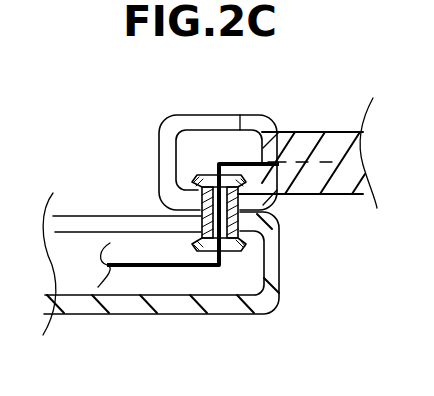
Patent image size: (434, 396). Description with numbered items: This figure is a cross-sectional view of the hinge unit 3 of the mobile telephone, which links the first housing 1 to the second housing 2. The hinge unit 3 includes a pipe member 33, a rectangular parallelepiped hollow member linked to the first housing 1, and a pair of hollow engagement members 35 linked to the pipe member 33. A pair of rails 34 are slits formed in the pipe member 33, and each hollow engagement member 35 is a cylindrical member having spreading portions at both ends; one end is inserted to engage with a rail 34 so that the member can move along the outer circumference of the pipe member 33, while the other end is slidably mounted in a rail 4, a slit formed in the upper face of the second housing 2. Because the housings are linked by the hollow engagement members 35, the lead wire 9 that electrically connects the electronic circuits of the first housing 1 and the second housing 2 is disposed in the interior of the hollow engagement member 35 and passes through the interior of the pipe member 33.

The first housing 1 is at (302, 132).
The second housing 2 is at (128, 313).
The hinge unit 3 is at (88, 68).
The rail 4 is at (78, 232).
The lead wire 9 is at (235, 162).
The pipe member 33 is at (160, 128).
The rail 34 is at (172, 173).
The hollow engagement member 35 is at (200, 203).